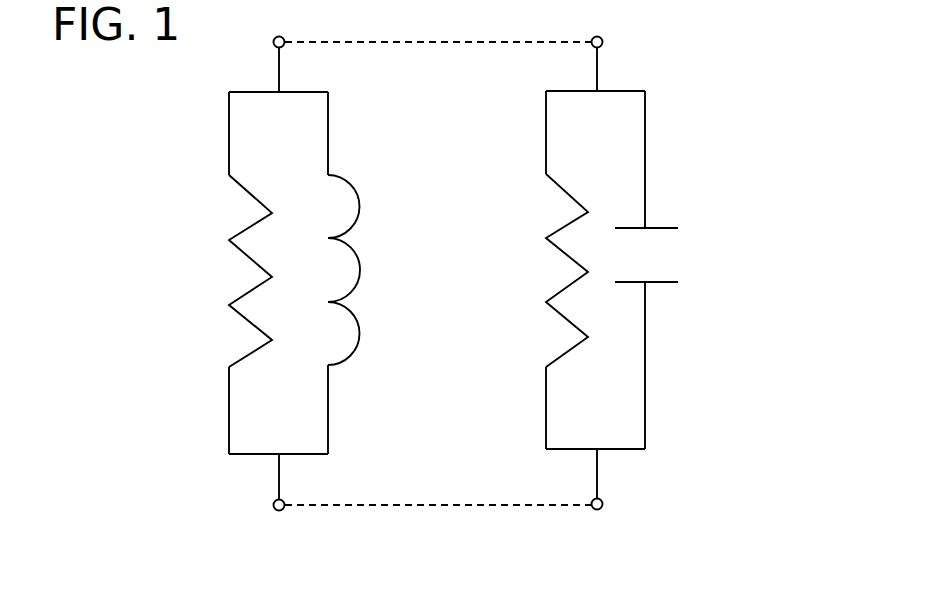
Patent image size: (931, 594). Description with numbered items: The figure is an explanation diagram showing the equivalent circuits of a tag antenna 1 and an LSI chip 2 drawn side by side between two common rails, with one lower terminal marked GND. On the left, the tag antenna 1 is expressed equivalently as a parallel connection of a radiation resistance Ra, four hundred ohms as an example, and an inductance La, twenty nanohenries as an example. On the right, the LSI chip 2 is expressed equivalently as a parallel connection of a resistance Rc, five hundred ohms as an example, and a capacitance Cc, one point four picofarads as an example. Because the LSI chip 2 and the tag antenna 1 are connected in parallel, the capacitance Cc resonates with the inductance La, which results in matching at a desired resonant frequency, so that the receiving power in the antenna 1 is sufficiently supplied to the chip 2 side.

The tag antenna 1 is at (287, 316).
The LSI chip 2 is at (654, 312).
The radiation resistance Ra is at (224, 271).
The inductance La is at (363, 270).
The resistance Rc is at (542, 270).
The capacitance Cc is at (665, 255).
The ground terminal GND is at (618, 494).